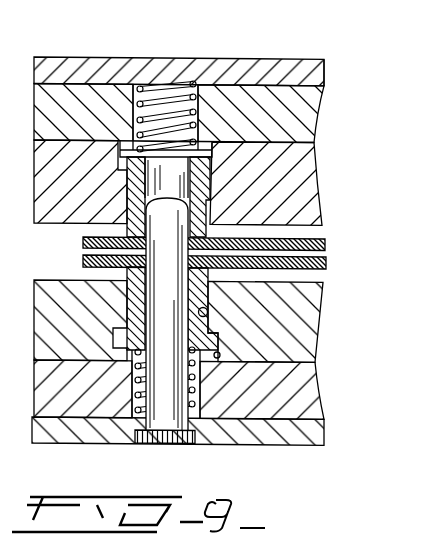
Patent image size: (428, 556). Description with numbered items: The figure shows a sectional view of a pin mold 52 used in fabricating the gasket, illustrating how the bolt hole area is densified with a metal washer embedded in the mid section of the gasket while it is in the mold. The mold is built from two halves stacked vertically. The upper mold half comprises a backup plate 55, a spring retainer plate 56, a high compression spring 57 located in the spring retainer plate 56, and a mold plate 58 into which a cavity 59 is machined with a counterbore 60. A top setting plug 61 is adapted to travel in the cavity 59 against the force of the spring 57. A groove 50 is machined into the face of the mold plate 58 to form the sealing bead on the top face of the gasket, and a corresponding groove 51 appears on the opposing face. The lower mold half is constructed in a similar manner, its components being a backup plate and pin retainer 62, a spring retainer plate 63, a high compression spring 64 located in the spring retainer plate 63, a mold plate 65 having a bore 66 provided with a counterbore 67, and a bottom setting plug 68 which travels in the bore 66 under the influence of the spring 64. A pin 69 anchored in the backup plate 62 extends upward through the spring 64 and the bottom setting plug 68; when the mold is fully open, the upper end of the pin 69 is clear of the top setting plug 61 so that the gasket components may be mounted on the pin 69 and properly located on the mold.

The groove 50 is at (245, 221).
The second sheet strip 51 is at (289, 290).
The pin mold 52 is at (330, 84).
The backup plate 55 is at (286, 67).
The spring retainer plate 56 is at (304, 108).
The high compression spring 57 is at (176, 100).
The mold plate 58 is at (301, 163).
The cavity 59 is at (210, 188).
The counterbore 60 is at (209, 149).
The top setting plug 61 is at (137, 180).
The backup plate and pin retainer 62 is at (306, 432).
The spring retainer plate 63 is at (306, 397).
The high compression spring 64 is at (203, 382).
The mold plate 65 is at (297, 340).
The bore 66 is at (207, 312).
The counterbore 67 is at (220, 354).
The bottom setting plug 68 is at (137, 301).
The pin 69 is at (163, 405).